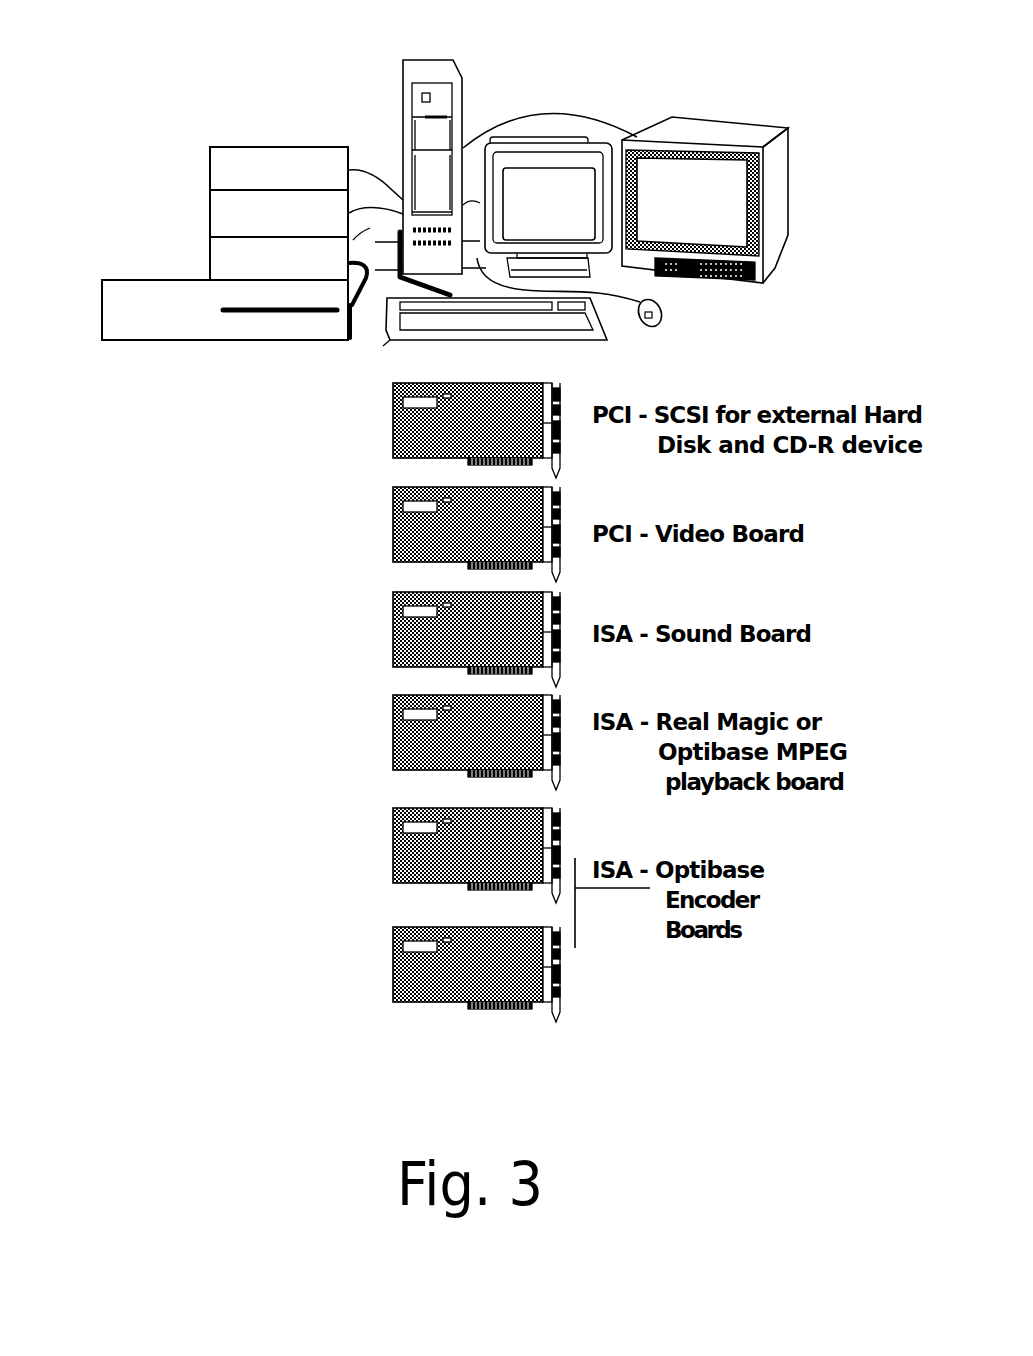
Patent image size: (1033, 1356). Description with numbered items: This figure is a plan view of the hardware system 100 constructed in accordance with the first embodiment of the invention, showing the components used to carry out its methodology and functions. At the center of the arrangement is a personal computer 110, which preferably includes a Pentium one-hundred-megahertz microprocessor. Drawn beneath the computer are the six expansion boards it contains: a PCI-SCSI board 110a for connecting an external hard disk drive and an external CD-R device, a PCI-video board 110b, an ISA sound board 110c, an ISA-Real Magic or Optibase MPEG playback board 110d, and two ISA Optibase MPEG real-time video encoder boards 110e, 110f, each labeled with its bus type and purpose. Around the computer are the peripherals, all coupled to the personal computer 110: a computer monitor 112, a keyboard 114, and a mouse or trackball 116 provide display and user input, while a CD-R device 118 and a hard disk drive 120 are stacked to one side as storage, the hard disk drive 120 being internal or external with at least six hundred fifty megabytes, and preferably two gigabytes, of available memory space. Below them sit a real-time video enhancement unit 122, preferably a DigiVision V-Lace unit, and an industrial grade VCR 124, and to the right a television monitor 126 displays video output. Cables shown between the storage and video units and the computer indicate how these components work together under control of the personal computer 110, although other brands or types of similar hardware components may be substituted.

The system 100 is at (627, 42).
The personal computer 110 is at (462, 100).
The computer monitor 112 is at (581, 116).
The keyboard 114 is at (387, 343).
The mouse or trackball 116 is at (662, 308).
The CD-R device 118 is at (210, 170).
The hard disk drive 120 is at (210, 213).
The real-time video enhancement unit 122 is at (210, 255).
The industrial grade VCR 124 is at (102, 303).
The television monitor 126 is at (790, 202).
The PCI-SCSI board 110a is at (393, 446).
The PCI-video board 110b is at (393, 527).
The ISA sound board 110c is at (393, 628).
The ISA-Real Magic or Optibase MPEG Playback board 110d is at (393, 732).
The ISA Optibase MPEG real-time video encoder board 110e is at (393, 850).
The ISA Optibase MPEG real-time video encoder board 110f is at (393, 965).